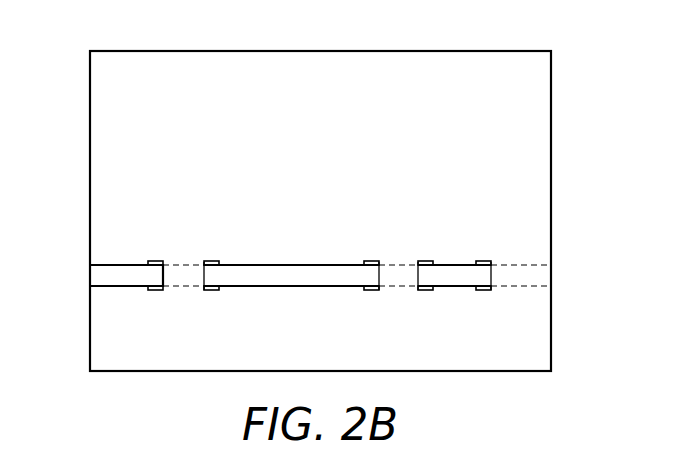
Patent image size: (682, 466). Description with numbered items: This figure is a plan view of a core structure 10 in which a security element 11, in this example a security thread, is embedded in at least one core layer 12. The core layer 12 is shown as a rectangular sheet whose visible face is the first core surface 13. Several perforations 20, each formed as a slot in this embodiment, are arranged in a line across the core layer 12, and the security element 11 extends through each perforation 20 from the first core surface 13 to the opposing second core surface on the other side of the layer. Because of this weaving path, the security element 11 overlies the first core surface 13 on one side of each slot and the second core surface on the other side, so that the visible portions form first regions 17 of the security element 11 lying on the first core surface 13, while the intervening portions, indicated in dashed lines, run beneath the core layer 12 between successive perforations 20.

The core structure 10 is at (82, 68).
The security element 11 is at (290, 268).
The core layer 12 is at (551, 151).
The first core surface 13 is at (497, 67).
The first region 17 is at (123, 289).
The perforation 20 is at (154, 261).